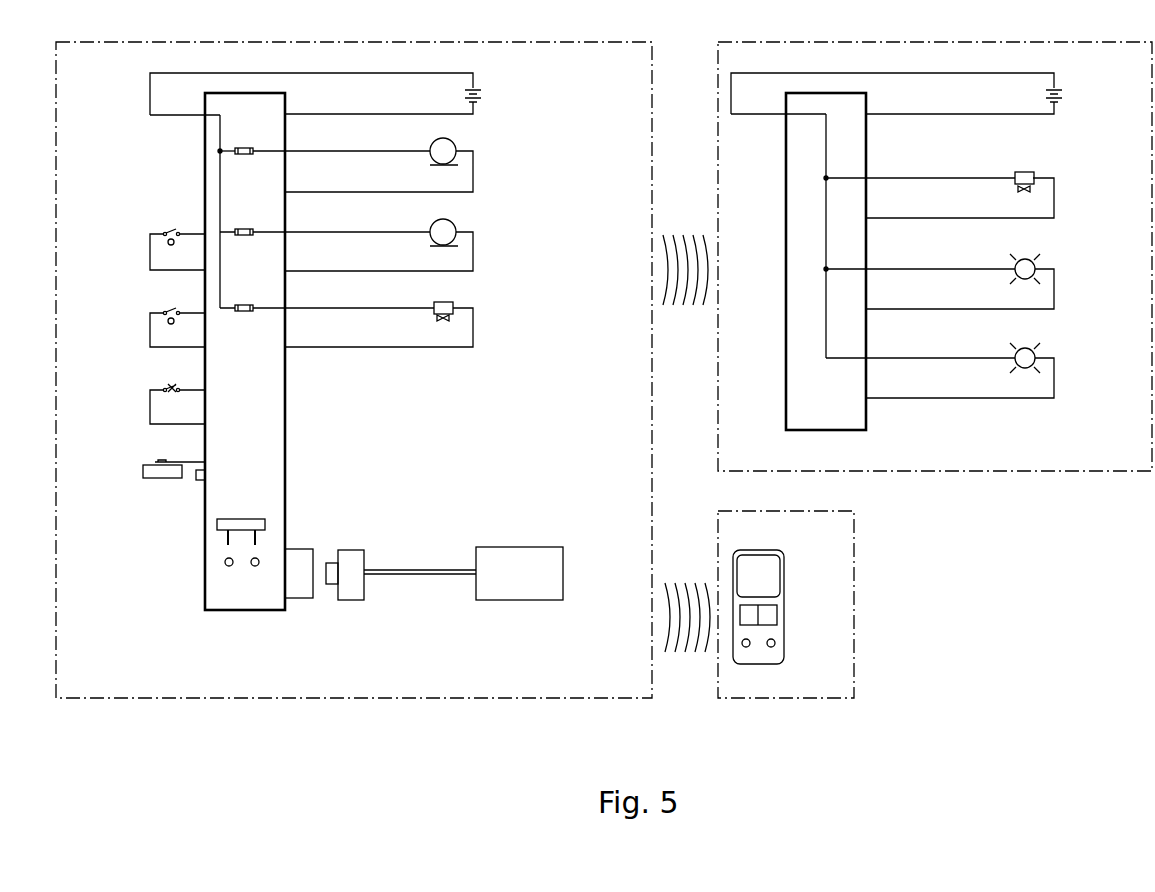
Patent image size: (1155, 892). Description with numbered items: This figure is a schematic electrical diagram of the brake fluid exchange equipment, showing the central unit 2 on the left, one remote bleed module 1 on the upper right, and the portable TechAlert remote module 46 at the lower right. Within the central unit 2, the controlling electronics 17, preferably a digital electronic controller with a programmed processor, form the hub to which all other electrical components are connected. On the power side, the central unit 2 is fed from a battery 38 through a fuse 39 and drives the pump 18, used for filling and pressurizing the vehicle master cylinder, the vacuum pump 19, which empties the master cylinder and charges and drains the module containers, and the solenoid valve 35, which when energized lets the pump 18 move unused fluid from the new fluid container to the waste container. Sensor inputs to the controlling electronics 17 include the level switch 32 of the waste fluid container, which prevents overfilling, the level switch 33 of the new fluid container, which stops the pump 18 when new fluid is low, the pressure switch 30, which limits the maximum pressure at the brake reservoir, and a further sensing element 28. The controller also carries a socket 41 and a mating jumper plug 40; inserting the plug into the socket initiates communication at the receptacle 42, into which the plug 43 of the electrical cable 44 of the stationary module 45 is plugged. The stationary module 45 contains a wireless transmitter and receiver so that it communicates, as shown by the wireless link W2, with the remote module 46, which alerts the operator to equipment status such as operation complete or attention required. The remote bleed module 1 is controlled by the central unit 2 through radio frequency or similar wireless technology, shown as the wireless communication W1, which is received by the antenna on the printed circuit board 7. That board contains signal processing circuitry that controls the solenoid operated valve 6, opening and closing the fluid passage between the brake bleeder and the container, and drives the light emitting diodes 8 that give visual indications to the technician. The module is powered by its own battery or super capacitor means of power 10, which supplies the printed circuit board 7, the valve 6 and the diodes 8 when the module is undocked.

The remote bleed module 1 is at (968, 457).
The central unit 2 is at (477, 688).
The solenoid operated valve 6 is at (1030, 174).
The printed circuit board 7 is at (806, 365).
The light emitting diodes 8 is at (1035, 258).
The means of power 10 is at (1058, 86).
The controlling electronics 17 is at (262, 428).
The pump 18 is at (448, 143).
The vacuum pump 19 is at (448, 224).
The sensor 28 is at (155, 463).
The pressure switch 30 is at (168, 388).
The level switch 32 is at (168, 232).
The level switch 33 is at (168, 311).
The solenoid valve 35 is at (448, 306).
The trailer battery 38 is at (476, 86).
The fuse 39 is at (225, 155).
The jumper plug 40 is at (225, 526).
The socket 41 is at (224, 574).
The receptacle 42 is at (300, 590).
The plug 43 is at (350, 590).
The electrical cable 44 is at (410, 578).
The stationary module 45 is at (557, 576).
The remote module 46 is at (778, 633).
The wireless communication W1 is at (681, 222).
The wireless communication W2 is at (682, 674).